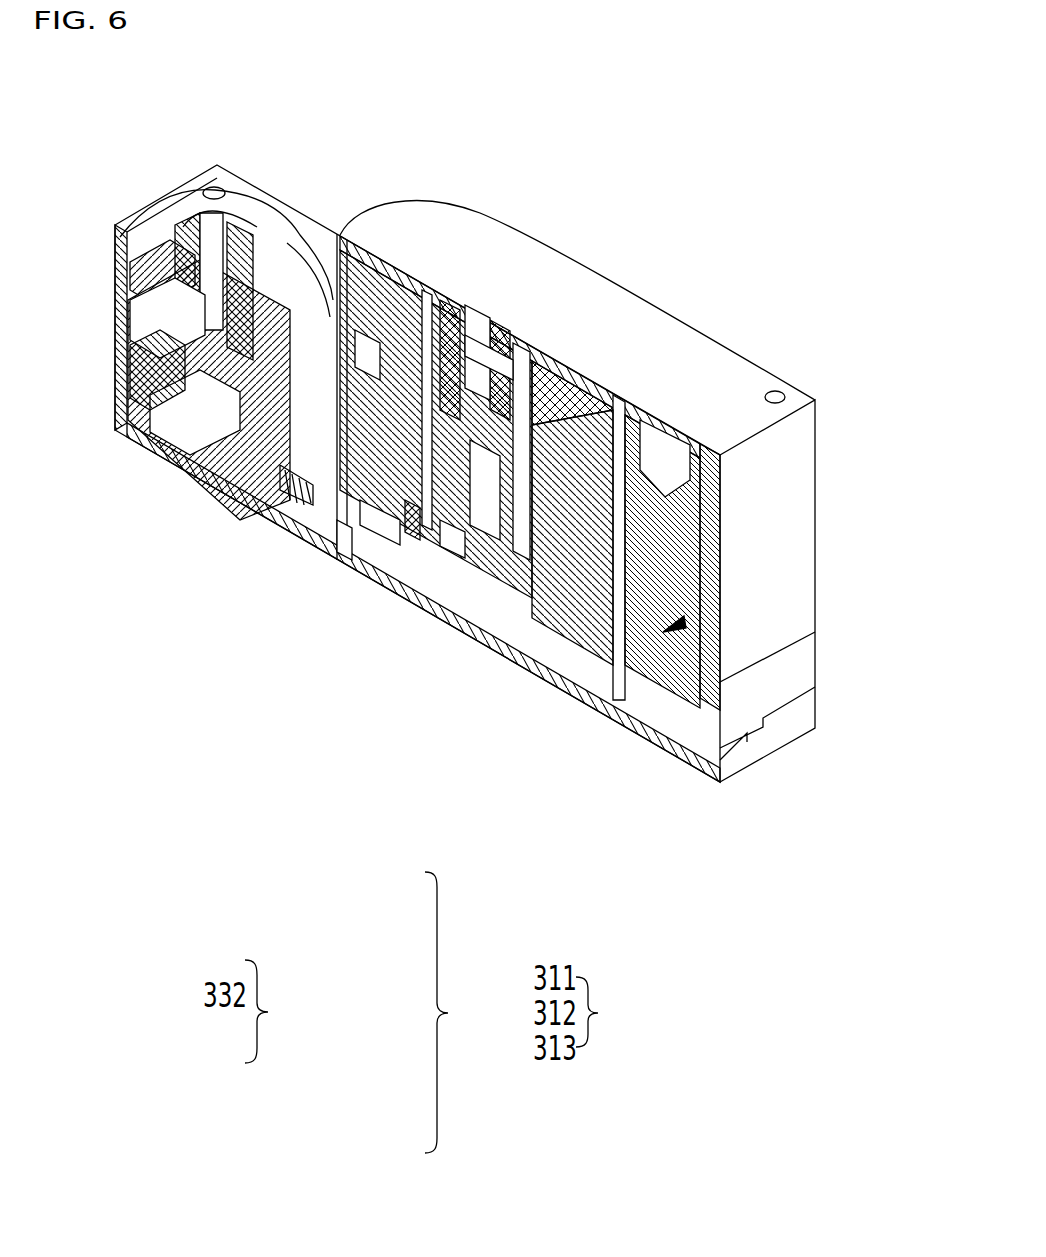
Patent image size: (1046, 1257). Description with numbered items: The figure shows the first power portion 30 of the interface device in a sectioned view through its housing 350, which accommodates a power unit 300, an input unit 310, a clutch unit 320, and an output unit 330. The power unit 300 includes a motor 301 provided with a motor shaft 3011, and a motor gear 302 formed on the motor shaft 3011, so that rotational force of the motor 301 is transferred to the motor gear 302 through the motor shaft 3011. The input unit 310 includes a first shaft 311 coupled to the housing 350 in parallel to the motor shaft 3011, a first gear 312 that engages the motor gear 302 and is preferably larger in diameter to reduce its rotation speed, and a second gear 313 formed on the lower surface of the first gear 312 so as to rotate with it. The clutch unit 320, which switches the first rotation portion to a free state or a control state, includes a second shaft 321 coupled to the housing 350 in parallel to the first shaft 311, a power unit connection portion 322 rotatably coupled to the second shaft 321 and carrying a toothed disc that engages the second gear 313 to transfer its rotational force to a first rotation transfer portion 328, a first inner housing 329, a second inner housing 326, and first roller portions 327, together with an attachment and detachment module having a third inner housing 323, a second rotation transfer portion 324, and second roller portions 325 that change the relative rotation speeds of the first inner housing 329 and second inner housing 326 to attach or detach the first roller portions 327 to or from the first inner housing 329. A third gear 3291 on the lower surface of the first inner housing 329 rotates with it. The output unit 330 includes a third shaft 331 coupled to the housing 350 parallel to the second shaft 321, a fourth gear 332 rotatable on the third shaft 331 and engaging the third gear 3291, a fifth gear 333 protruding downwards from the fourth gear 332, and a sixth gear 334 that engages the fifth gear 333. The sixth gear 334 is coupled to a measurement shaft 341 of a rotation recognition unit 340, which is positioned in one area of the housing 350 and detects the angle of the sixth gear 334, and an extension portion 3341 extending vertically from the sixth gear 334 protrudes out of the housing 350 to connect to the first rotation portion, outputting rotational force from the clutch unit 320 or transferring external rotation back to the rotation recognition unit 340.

The first power portion 30 is at (788, 138).
The power unit 300 is at (720, 596).
The motor 301 is at (672, 712).
The motor shaft 3011 is at (617, 665).
The motor gear 302 is at (660, 397).
The input unit 310 is at (612, 1012).
The first shaft 311 is at (527, 350).
The first gear 312 is at (633, 400).
The second gear 313 is at (557, 380).
The clutch unit 320 is at (461, 1012).
The second shaft 321 is at (432, 283).
The power unit connection portion 322 is at (447, 323).
The third inner housing 323 is at (522, 348).
The second rotation transfer portion 324 is at (477, 305).
The second roller portions 325 is at (483, 335).
The second inner housing 326 is at (490, 520).
The first roller portions 327 is at (391, 716).
The first rotation transfer portion 328 is at (458, 548).
The first inner housing 329 is at (383, 540).
The third gear 3291 is at (418, 515).
The output unit 330 is at (281, 1011).
The third shaft 331 is at (340, 538).
The fourth gear 332 is at (280, 300).
The fifth gear 333 is at (300, 507).
The sixth gear 334 is at (114, 300).
The extension portion 3341 is at (114, 258).
The rotation recognition unit 340 is at (245, 462).
The measurement shaft 341 is at (114, 354).
The housing 350 is at (790, 463).